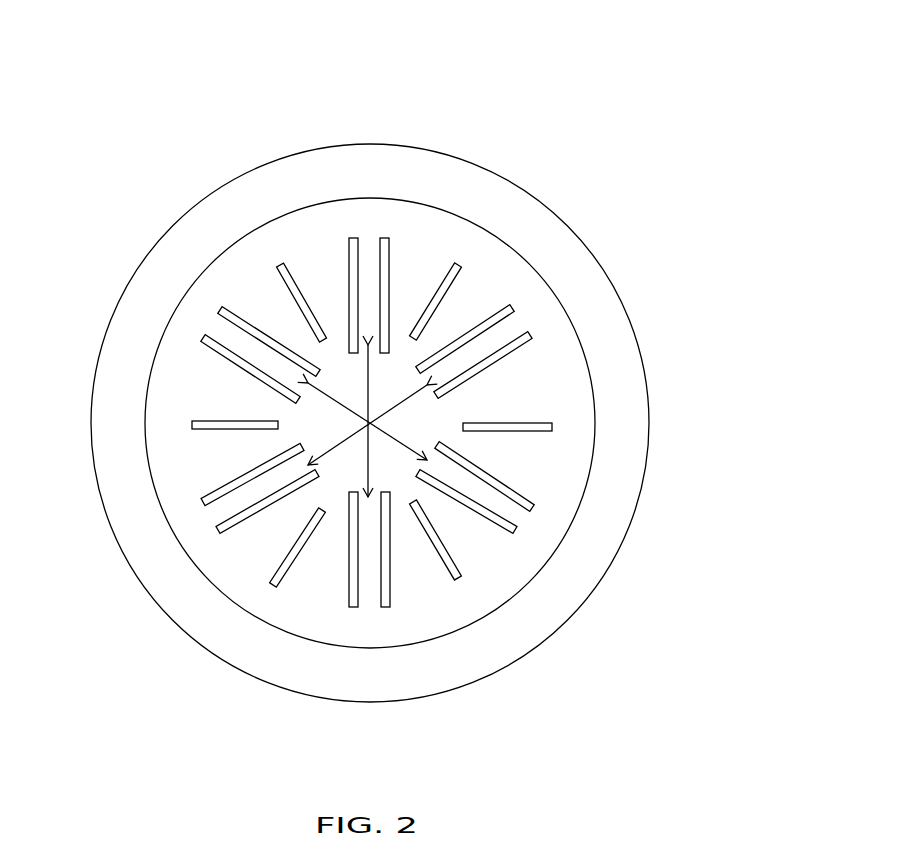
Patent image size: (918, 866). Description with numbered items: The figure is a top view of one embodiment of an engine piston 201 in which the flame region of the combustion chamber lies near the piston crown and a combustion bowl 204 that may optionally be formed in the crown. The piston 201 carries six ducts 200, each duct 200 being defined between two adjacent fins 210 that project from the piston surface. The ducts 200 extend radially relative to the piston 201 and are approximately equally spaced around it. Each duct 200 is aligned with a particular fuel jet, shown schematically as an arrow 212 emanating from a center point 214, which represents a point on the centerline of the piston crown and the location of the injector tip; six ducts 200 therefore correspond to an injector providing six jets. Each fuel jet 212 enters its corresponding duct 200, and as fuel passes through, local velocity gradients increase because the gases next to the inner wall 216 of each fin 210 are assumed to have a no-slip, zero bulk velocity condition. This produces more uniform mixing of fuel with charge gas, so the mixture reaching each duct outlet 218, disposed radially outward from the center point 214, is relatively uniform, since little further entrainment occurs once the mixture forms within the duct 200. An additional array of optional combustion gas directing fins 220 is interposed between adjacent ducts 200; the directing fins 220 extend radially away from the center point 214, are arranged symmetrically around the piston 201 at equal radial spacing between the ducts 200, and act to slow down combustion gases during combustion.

The ducts 200 is at (511, 324).
The piston 201 is at (608, 83).
The combustion bowl 204 is at (223, 580).
The fins 210 is at (500, 308).
The arrow 212 is at (400, 404).
The center point 214 is at (368, 422).
The inner wall 216 is at (720, 600).
The duct outlet 218 is at (365, 242).
The combustion gas directing fins 220 is at (297, 282).